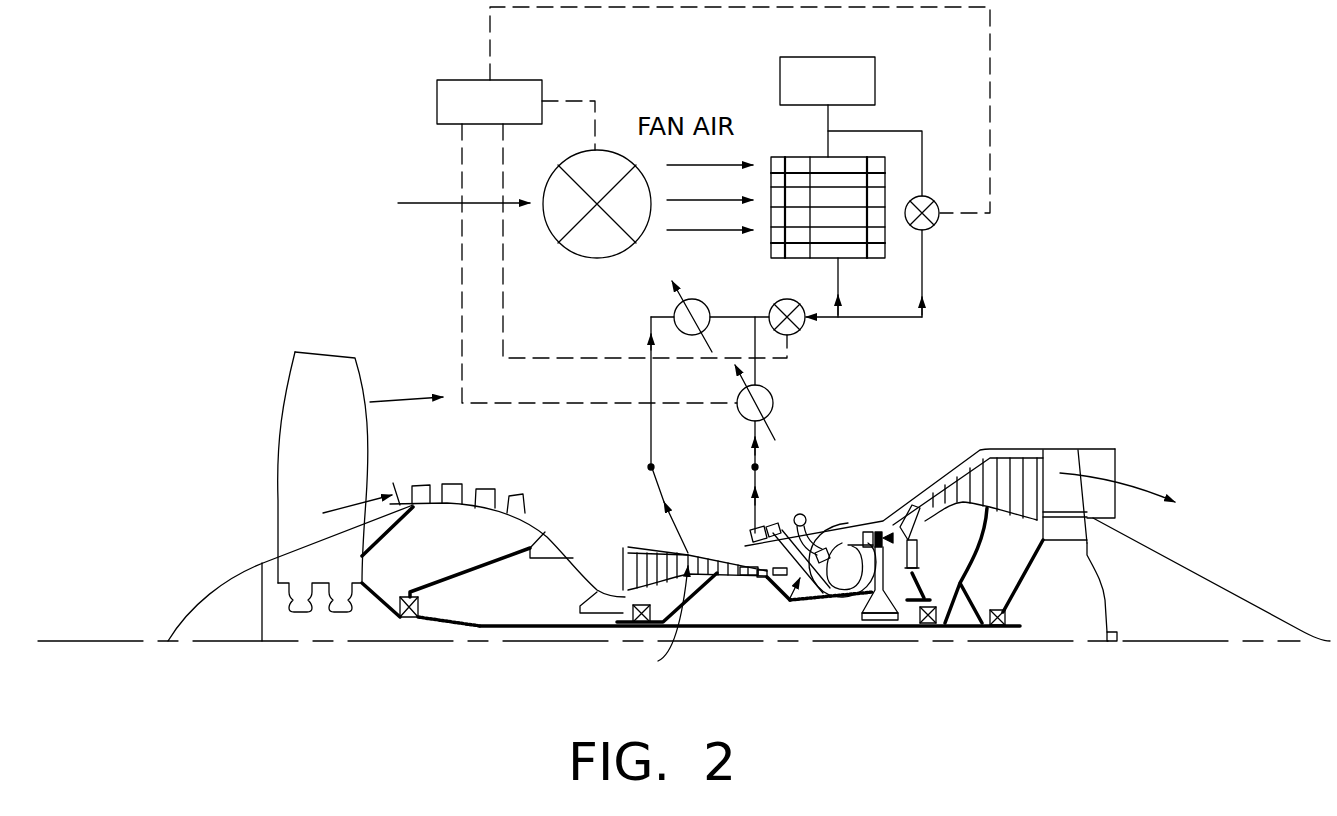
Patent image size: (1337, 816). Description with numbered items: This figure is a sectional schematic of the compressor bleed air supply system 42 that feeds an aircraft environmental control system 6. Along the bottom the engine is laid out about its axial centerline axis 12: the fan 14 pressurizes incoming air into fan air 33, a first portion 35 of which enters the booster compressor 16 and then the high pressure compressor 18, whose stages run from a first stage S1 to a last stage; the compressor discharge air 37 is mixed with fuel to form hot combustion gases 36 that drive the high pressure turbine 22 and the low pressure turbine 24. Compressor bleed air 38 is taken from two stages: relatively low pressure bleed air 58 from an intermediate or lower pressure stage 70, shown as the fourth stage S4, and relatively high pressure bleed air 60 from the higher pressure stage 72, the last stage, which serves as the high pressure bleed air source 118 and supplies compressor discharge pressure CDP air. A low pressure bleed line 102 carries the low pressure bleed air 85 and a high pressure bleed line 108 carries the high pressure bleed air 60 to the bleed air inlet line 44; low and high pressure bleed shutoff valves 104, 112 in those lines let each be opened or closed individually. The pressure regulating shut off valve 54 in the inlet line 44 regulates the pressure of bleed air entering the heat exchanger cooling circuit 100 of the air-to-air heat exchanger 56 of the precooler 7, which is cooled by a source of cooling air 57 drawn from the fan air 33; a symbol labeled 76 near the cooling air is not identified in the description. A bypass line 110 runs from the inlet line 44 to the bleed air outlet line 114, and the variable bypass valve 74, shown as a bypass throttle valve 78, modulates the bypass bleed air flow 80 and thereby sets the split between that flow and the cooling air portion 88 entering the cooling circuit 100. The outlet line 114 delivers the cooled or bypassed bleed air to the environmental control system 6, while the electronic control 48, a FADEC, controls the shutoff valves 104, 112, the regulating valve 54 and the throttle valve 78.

The compressor air supply precooler 7 is at (960, 145).
The electronic control 48 is at (520, 80).
The fan 76 is at (610, 150).
The source of cooling air 57 is at (430, 202).
The environmental control system 6 is at (840, 57).
The bleed air outlet line 114 is at (828, 118).
The air-to-air heat exchanger 56 is at (875, 157).
The heat exchanger cooling circuit 100 is at (853, 183).
The variable bypass valve 74 is at (940, 205).
The compressor bleed air supply system 42 is at (958, 240).
The bypass throttle valve 78 is at (930, 228).
The bleed air bypass line 110 is at (925, 270).
The bypass bleed air flow 80 is at (925, 312).
The cooling air portion 88 is at (840, 300).
The compressor bleed air 38 is at (808, 278).
The pressure regulating shut off valve 54 is at (803, 330).
The bleed air inlet line 44 is at (732, 317).
The low pressure bleed shutoff valve 104 is at (690, 336).
The low pressure bleed line 102 is at (651, 436).
The relatively low pressure bleed air 85 is at (651, 347).
The high pressure bleed line 108 is at (757, 370).
The high pressure bleed shutoff valve 112 is at (773, 403).
The relatively high pressure bleed air 60 is at (757, 450).
The relatively low pressure bleed air 58 is at (665, 518).
The fourth stage S4 is at (688, 553).
The intermediate or lower pressure stage 70 is at (692, 553).
The fan 14 is at (337, 468).
The fan air 33 is at (392, 400).
The first portion of fan air 35 is at (352, 506).
The booster compressor 16 is at (450, 478).
The high pressure compressor 18 is at (710, 550).
The first stage S1 is at (597, 590).
The higher pressure stage 72 is at (765, 578).
The compressor discharge air 37 is at (763, 590).
The high pressure bleed air source 118 is at (814, 596).
The compressor discharge pressure air CDP is at (806, 517).
The high pressure turbine 22 is at (882, 513).
The hot combustion gases 36 is at (917, 568).
The low pressure turbine 24 is at (980, 450).
The centerline axis 12 is at (1207, 640).